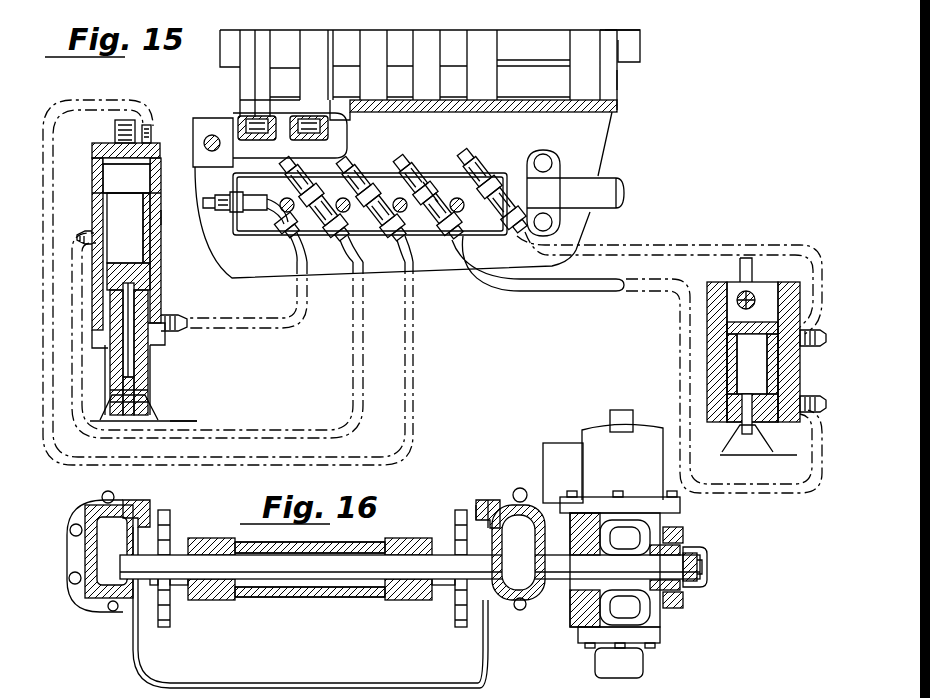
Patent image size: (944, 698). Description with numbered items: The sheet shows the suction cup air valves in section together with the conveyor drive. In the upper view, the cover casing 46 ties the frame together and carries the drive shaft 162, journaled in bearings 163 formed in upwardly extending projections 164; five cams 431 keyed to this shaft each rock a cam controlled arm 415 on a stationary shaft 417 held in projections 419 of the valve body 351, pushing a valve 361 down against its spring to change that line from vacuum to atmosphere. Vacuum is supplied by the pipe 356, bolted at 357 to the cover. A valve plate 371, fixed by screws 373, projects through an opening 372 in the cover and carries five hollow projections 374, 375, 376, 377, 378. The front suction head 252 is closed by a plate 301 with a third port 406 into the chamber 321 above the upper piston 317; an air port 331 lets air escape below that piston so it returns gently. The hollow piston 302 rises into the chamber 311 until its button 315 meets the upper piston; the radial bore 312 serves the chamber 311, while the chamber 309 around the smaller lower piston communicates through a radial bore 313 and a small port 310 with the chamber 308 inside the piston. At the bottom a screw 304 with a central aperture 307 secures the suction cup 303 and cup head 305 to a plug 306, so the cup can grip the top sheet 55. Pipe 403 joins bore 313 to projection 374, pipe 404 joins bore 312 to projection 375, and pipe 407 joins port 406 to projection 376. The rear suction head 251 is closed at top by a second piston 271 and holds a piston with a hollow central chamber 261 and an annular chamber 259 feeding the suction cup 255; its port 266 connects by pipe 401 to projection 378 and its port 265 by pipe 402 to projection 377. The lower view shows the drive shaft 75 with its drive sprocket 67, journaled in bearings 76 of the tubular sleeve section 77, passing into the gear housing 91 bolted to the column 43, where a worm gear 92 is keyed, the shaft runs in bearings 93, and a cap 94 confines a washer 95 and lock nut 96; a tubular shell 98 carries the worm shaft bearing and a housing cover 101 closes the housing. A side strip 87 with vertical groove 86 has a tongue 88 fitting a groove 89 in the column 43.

In FIG. 15, the cam 431 is at (455, 33).
In FIG. 15, the bearings 163 is at (613, 31).
In FIG. 15, the drive shaft 162 is at (632, 47).
In FIG. 15, the upwardly extending projections 164 is at (618, 77).
In FIG. 15, the housing cover or casing 46 is at (605, 103).
In FIG. 15, the projections 419 is at (222, 128).
In FIG. 15, the horizontal stationary shaft 417 is at (193, 148).
In FIG. 15, the cam controlled arm 415 is at (308, 118).
In FIG. 15, the valve 361 is at (283, 135).
In FIG. 15, the opening 372 is at (358, 172).
In FIG. 15, the valve plate 371 is at (425, 178).
In FIG. 15, the hollow projection 374 is at (275, 202).
In FIG. 15, the hollow projection 375 is at (322, 202).
In FIG. 15, the hollow projection 376 is at (385, 194).
In FIG. 15, the hollow projection 377 is at (440, 202).
In FIG. 15, the hollow projection 378 is at (480, 192).
In FIG. 15, the valve body or cylinder block 351 is at (255, 236).
In FIG. 15, the pipe 403 is at (272, 325).
In FIG. 15, the pipe 404 is at (343, 419).
In FIG. 15, the pipe 407 is at (415, 380).
In FIG. 15, the screws 373 is at (432, 235).
In FIG. 15, the pipe 402 is at (578, 292).
In FIG. 15, the pipe 401 is at (702, 248).
In FIG. 15, the vacuum supply pipe 356 is at (602, 183).
In FIG. 15, the bolted connection 357 is at (545, 160).
In FIG. 15, the plate 301 is at (110, 147).
In FIG. 15, the third port 406 is at (152, 130).
In FIG. 15, the chamber 321 is at (100, 162).
In FIG. 15, the upper piston 317 is at (126, 178).
In FIG. 15, the air port 331 is at (96, 193).
In FIG. 15, the chamber 311 is at (128, 228).
In FIG. 15, the radial bore 312 is at (95, 230).
In FIG. 15, the front suction head 252 is at (157, 218).
In FIG. 15, the button 315 is at (138, 268).
In FIG. 15, the small port 310 is at (140, 290).
In FIG. 15, the chamber 309 is at (150, 300).
In FIG. 15, the radial bore 313 is at (165, 318).
In FIG. 15, the chamber 308 is at (152, 345).
In FIG. 15, the hollow piston 302 is at (152, 358).
In FIG. 15, the plug 306 is at (140, 385).
In FIG. 15, the threaded screw 304 is at (138, 395).
In FIG. 15, the central aperture 307 is at (140, 407).
In FIG. 15, the cup head 305 is at (108, 408).
In FIG. 15, the suction rubber or cup 303 is at (180, 421).
In FIG. 15, the sheets 55 is at (176, 421).
In FIG. 15, the rear suction head 251 is at (770, 372).
In FIG. 15, the second piston 271 is at (752, 293).
In FIG. 15, the hollow central chamber 261 is at (745, 357).
In FIG. 15, the chamber 259 is at (752, 387).
In FIG. 15, the second radial port 266 is at (793, 332).
In FIG. 15, the port 265 is at (772, 410).
In FIG. 15, the suction rubber or cup 255 is at (768, 462).
In FIG. 16, the hollow columns 43 is at (82, 515).
In FIG. 16, the side strip 87 is at (145, 505).
In FIG. 16, the vertical groove 86 is at (152, 508).
In FIG. 16, the drive sprocket 67 is at (168, 625).
In FIG. 16, the bearings 76 is at (203, 543).
In FIG. 16, the tubular sleeve section 77 is at (344, 592).
In FIG. 16, the drive shaft 75 is at (283, 572).
In FIG. 16, the tongue 88 is at (497, 503).
In FIG. 16, the groove 89 is at (498, 513).
In FIG. 16, the tubular shell 98 is at (620, 468).
In FIG. 16, the lock nut 96 is at (616, 415).
In FIG. 16, the gear housing 91 is at (657, 524).
In FIG. 16, the worm gear 92 is at (655, 608).
In FIG. 16, the bearings 93 is at (688, 540).
In FIG. 16, the cap 94 is at (712, 580).
In FIG. 16, the washer 95 is at (698, 561).
In FIG. 16, the housing cover 101 is at (645, 660).